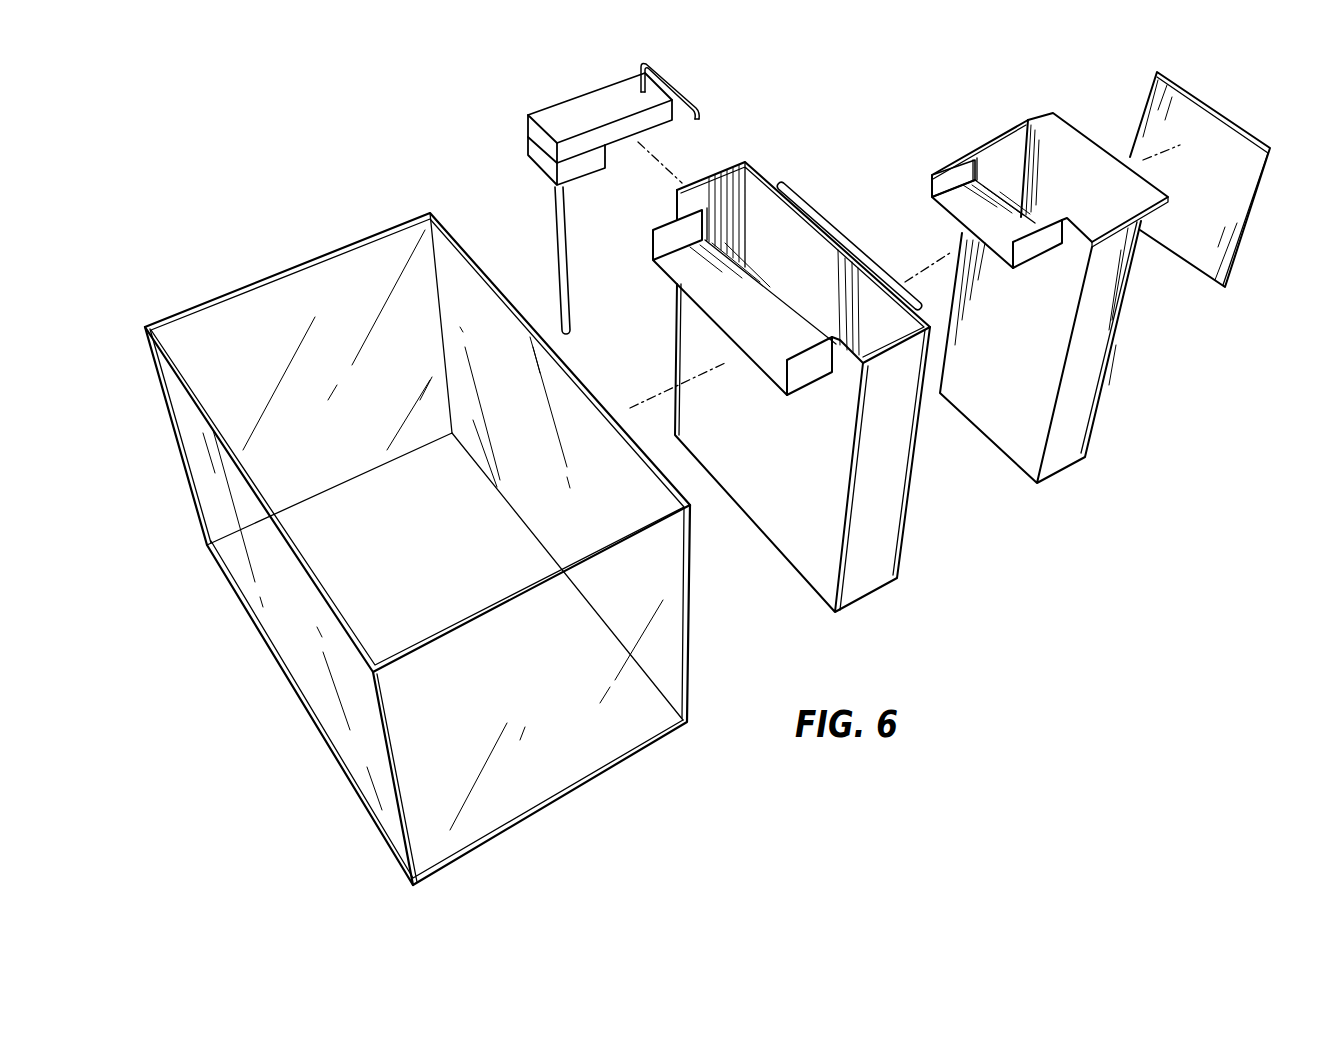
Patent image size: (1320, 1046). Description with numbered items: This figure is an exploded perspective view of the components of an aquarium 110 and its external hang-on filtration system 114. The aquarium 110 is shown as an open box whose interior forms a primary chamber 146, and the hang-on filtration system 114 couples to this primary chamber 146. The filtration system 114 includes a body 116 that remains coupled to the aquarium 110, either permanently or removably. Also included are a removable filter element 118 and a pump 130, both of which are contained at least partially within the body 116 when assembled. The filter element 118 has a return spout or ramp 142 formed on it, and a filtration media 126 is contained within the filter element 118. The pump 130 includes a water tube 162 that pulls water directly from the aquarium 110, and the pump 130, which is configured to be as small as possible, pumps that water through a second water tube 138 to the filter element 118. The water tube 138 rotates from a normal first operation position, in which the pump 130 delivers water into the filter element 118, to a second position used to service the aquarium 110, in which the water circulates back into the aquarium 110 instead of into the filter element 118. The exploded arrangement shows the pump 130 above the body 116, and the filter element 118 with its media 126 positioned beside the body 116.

The aquarium 110 is at (258, 220).
The primary chamber 146 is at (273, 354).
The pump 130 is at (560, 110).
The water tube 138 is at (681, 90).
The water tube 162 is at (555, 260).
The body 116 is at (888, 503).
The hang-on filtration system 114 is at (1048, 280).
The removable filter element 118 is at (1000, 120).
The return spout or ramp 142 is at (953, 197).
The filtration media 126 is at (1177, 113).